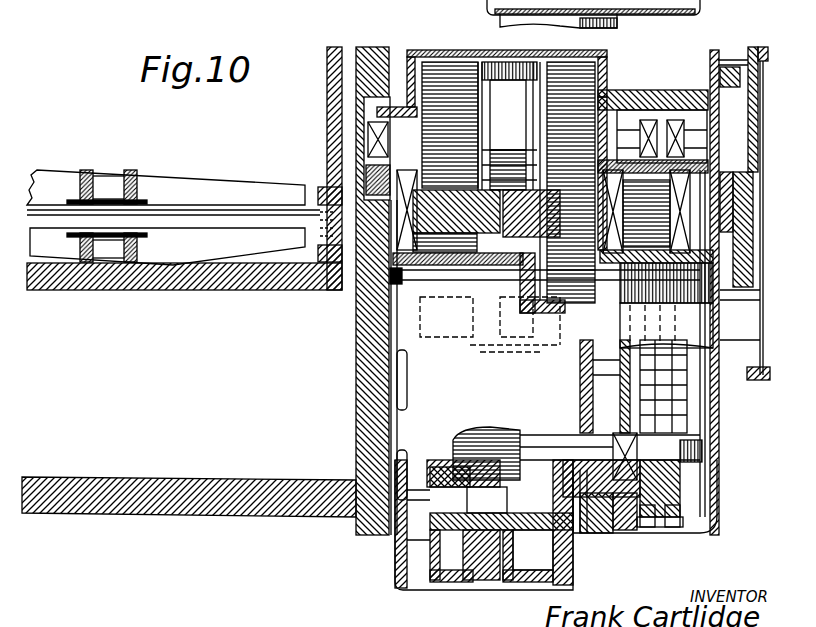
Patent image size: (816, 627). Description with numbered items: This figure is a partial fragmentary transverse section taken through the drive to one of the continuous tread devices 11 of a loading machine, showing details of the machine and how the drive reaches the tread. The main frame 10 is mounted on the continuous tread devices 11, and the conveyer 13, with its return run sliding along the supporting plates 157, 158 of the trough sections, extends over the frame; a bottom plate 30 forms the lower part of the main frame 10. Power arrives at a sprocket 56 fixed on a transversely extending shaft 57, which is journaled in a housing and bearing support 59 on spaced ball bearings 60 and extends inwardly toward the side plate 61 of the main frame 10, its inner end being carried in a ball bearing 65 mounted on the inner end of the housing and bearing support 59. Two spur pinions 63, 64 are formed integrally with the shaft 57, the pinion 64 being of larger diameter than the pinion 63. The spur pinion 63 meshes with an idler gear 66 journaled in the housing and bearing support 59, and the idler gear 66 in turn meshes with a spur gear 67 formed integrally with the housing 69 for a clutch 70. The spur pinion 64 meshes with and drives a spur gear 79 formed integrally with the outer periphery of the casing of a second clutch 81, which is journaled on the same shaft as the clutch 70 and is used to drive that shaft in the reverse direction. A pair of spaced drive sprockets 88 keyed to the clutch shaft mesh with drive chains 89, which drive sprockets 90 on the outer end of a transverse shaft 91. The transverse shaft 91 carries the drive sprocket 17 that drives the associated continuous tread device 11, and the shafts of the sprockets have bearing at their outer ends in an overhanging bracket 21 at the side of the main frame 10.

The main frame 10 is at (189, 501).
The continuous tread device 11 is at (514, 580).
The conveyer 13 is at (152, 183).
The drive sprocket 17 is at (486, 580).
The overhanging bracket 21 is at (592, 532).
The bottom plate 30 is at (155, 478).
The sprocket 56 is at (745, 115).
The transversely extending shaft 57 is at (725, 205).
The housing and bearing support 59 is at (462, 58).
The ball bearing 60 is at (628, 98).
The side plate 61 is at (356, 428).
The spur pinion 63 is at (534, 275).
The spur pinion 64 is at (470, 272).
The ball bearing 65 is at (326, 182).
The idler gear 66 is at (560, 336).
The spur gear 67 is at (605, 66).
The clutch housing 69 is at (528, 58).
The clutch 70 is at (560, 56).
The spur gear 79 is at (426, 58).
The clutch 81 is at (495, 62).
The drive sprocket 88 is at (678, 98).
The drive chain 89 is at (698, 402).
The sprocket 90 is at (668, 530).
The transverse shaft 91 is at (702, 442).
The supporting plate 157 is at (226, 228).
The supporting plate 158 is at (276, 280).